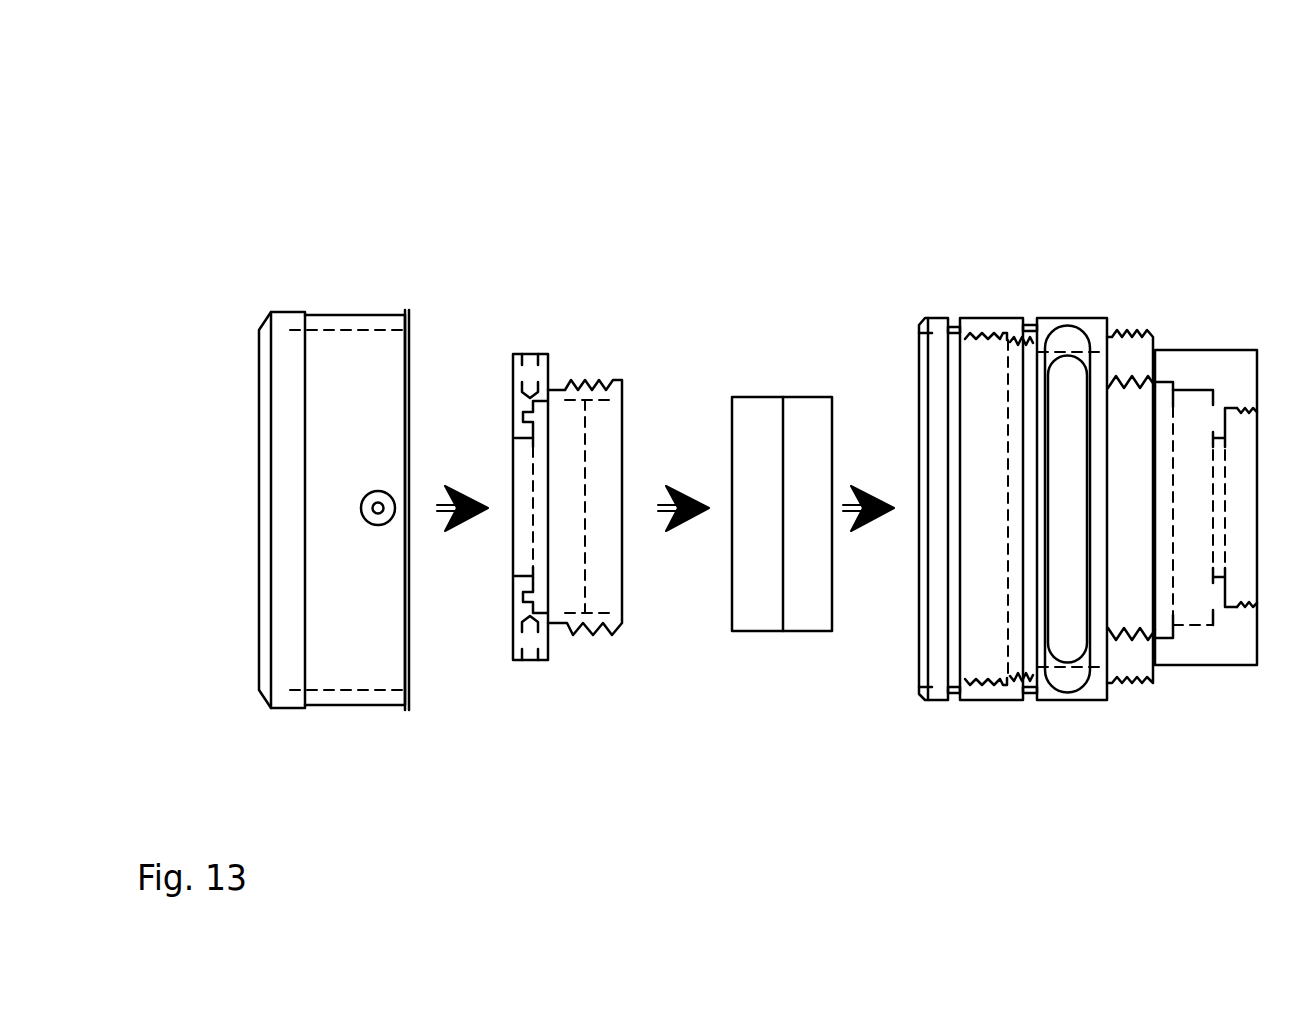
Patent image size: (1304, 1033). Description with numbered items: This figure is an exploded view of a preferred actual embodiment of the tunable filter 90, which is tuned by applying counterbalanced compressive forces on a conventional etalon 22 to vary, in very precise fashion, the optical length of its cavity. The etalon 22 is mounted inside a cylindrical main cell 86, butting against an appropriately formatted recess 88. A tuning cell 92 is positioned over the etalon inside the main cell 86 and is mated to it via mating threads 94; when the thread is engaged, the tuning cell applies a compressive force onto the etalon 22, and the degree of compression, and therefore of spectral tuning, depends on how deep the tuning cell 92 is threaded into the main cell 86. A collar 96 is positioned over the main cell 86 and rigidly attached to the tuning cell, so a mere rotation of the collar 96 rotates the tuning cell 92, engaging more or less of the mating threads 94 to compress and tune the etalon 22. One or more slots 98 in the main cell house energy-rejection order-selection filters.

The etalon 22 is at (783, 397).
The main cell 86 is at (1100, 318).
The recess 88 is at (1212, 418).
The tunable filter 90 is at (832, 126).
The tuning cell 92 is at (547, 355).
The mating threads 94 is at (602, 635).
The collar 96 is at (289, 312).
The slots 98 is at (1065, 607).